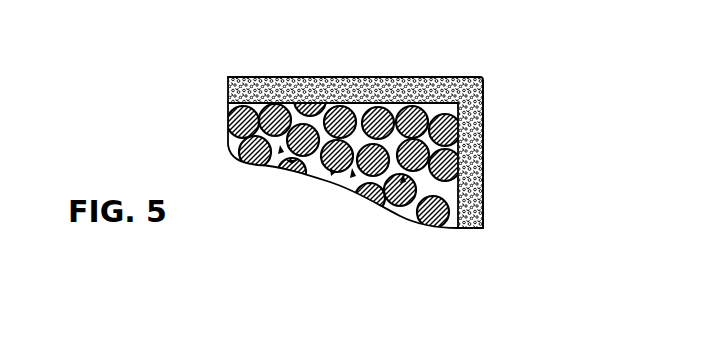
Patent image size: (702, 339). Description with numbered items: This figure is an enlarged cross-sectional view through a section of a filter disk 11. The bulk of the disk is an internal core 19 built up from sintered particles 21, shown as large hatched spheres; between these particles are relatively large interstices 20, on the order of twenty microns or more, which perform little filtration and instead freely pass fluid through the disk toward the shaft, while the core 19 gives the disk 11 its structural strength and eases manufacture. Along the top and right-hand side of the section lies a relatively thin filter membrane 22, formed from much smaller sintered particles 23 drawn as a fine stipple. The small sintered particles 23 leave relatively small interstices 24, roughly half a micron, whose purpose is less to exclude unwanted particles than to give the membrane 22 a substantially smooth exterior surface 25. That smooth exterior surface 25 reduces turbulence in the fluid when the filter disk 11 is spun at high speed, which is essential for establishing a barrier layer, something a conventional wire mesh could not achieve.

The filter disk 11 is at (500, 103).
The internal core 19 is at (353, 198).
The interstices 20 is at (458, 125).
The sintered particles 21 is at (292, 78).
The filter membrane 22 is at (397, 78).
The sintered particles 23 is at (348, 78).
The interstices 24 is at (265, 77).
The exterior surface 25 is at (420, 78).